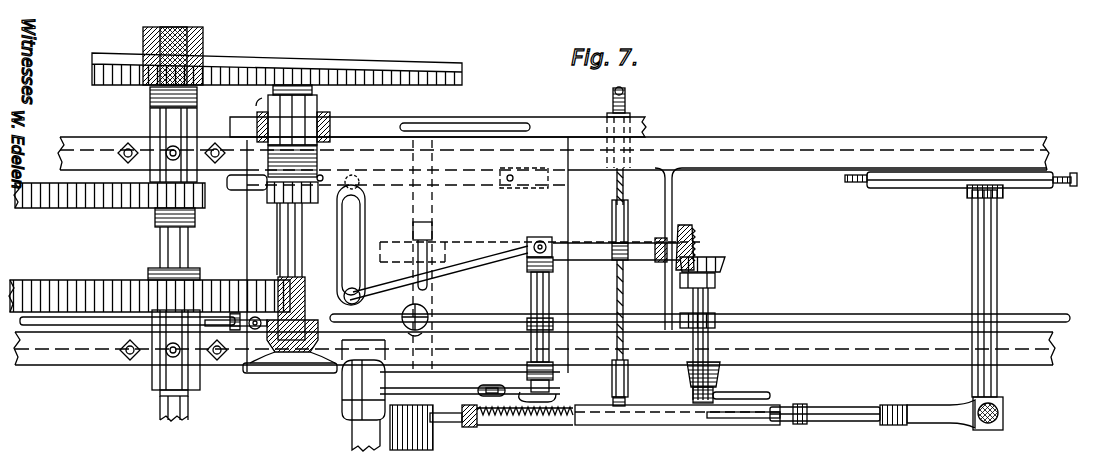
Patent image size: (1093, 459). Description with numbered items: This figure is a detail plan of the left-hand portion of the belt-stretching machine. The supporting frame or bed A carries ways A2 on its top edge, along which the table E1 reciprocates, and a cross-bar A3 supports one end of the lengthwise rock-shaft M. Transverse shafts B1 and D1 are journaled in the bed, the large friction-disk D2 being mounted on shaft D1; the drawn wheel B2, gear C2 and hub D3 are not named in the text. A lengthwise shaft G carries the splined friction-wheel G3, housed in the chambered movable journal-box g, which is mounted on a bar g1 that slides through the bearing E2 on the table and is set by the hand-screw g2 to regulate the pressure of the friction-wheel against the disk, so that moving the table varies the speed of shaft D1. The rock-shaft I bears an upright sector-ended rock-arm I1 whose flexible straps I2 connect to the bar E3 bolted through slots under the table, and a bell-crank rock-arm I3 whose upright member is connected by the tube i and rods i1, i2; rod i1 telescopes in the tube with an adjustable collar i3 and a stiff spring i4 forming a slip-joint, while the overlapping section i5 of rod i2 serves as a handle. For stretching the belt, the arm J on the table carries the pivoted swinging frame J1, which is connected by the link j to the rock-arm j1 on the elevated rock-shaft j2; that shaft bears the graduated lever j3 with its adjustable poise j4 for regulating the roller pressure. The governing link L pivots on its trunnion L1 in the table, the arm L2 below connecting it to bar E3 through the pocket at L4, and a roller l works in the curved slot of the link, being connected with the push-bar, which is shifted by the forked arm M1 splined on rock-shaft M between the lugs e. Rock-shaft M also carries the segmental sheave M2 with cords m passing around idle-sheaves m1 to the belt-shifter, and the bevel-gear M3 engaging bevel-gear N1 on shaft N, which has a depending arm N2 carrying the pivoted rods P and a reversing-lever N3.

The supporting frame or bed A is at (822, 170).
The ways A2 is at (810, 137).
The cross-bar A3 is at (677, 205).
The transverse shaft B1 is at (190, 415).
The gear wheel B2 is at (100, 274).
The gear wheel C2 is at (109, 204).
The transverse shaft D1 is at (158, 225).
The friction-disk D2 is at (410, 65).
The hub D3 is at (206, 205).
The table E1 is at (538, 231).
The bearing E2 is at (268, 204).
The bar E3 is at (486, 184).
The shaft G is at (438, 127).
The friction-wheel G3 is at (249, 98).
The movable journal-box g is at (306, 116).
The bar g1 is at (262, 207).
The hand-screw g2 is at (272, 365).
The rock-shaft I is at (986, 291).
The rock-arm I1 is at (1000, 188).
The flexible strap I2 is at (912, 185).
The rock-arm I3 is at (943, 422).
The tube i is at (676, 425).
The rod i1 is at (478, 272).
The rod i2 is at (844, 407).
The adjustable collar i3 is at (470, 427).
The spring i4 is at (533, 425).
The section or extension i5 is at (772, 424).
The arm J is at (342, 390).
The swinging frame J1 is at (380, 430).
The link j is at (494, 391).
The rock-arm j1 is at (550, 400).
The rock-shaft j2 is at (524, 292).
The graduated lever j3 is at (478, 314).
The adjustable poise j4 is at (428, 310).
The link L is at (360, 222).
The trunnion L1 is at (340, 240).
The arm L2 is at (340, 222).
The curved longitudinal slot or recess L4 is at (340, 262).
The roller l is at (360, 270).
The rock-shaft M is at (482, 245).
The forked arm M1 is at (412, 260).
The segmental wheel or sheave M2 is at (628, 218).
The bevel-gear M3 is at (692, 232).
The cord m is at (625, 185).
The idle-sheave m1 is at (624, 102).
The shaft N is at (712, 298).
The bevel-gear N1 is at (720, 260).
The depending arm N2 is at (690, 308).
The reversing-lever N3 is at (768, 398).
The rod P is at (636, 314).
The lug e is at (412, 232).